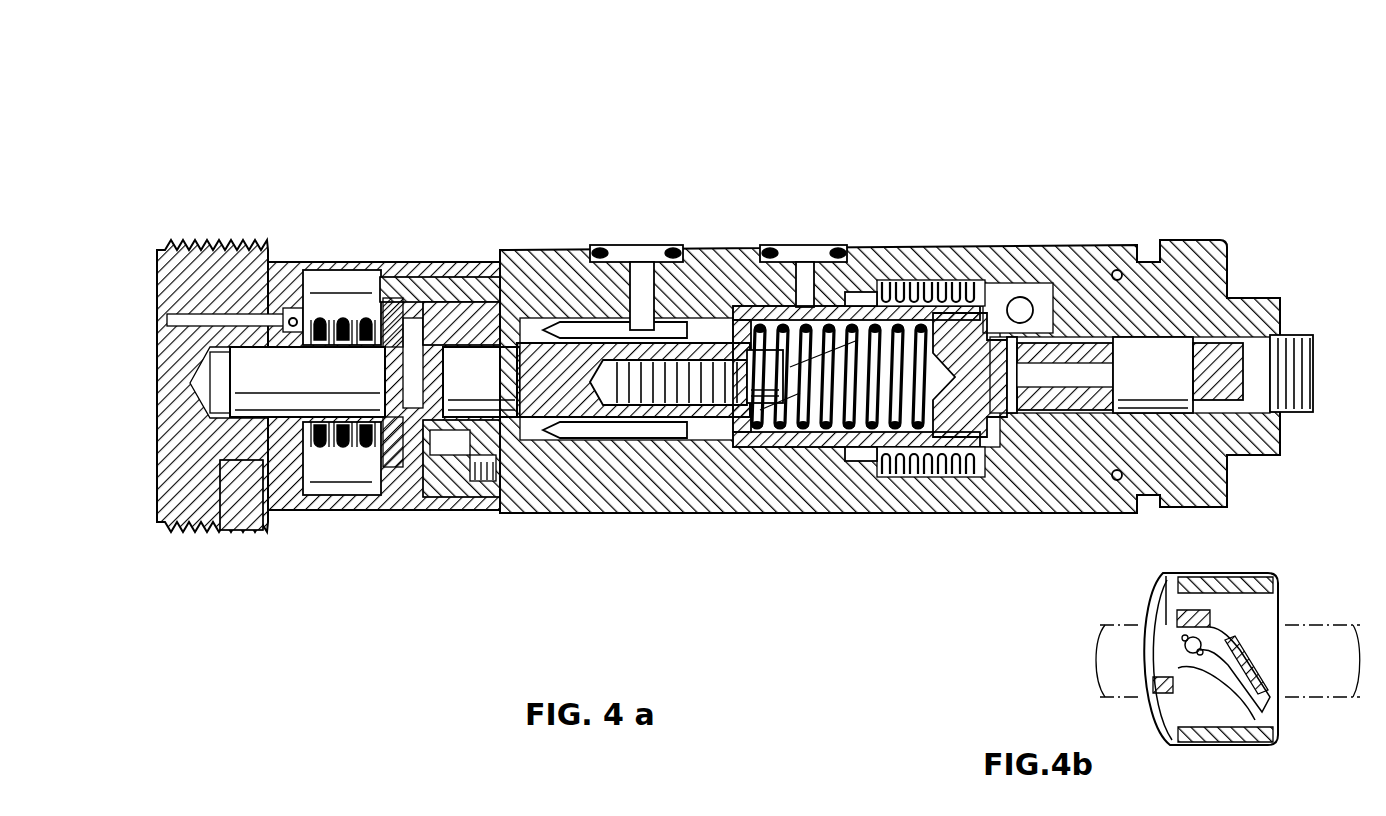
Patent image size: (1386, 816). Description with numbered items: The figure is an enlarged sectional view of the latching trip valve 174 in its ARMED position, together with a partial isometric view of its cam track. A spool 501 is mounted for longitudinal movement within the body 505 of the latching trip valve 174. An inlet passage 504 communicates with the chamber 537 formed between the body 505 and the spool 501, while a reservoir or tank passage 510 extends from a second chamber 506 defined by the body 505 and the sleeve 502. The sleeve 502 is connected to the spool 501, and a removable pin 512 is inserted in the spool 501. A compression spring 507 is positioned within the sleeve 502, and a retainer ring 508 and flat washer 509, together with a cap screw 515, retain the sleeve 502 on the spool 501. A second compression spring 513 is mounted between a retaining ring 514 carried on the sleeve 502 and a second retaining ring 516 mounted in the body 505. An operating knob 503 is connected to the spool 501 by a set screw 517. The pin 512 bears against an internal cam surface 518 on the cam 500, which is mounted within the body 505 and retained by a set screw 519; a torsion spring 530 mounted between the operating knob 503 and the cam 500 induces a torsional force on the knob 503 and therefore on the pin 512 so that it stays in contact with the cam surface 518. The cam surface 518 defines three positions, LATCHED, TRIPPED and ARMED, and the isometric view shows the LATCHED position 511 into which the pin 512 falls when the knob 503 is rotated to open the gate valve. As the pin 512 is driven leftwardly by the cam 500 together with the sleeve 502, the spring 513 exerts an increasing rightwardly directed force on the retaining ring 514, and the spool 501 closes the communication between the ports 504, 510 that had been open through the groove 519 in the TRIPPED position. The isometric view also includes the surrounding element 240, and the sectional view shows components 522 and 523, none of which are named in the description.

In FIG. 4A, the latching trip valve 174 is at (1172, 148).
In FIG. 4B, the roller 240 is at (1140, 600).
In FIG. 4A, the cam 500 is at (452, 305).
In FIG. 4A, the spool 501 is at (548, 300).
In FIG. 4A, the sleeve 502 is at (745, 515).
In FIG. 4A, the operating knob 503 is at (160, 262).
In FIG. 4A, the inlet passage 504 is at (645, 268).
In FIG. 4A, the body 505 is at (540, 515).
In FIG. 4A, the second chamber 506 is at (750, 330).
In FIG. 4A, the compression spring 507 is at (825, 515).
In FIG. 4A, the retainer ring 508 is at (700, 515).
In FIG. 4A, the flat washer 509 is at (790, 515).
In FIG. 4A, the tank passage 510 is at (815, 250).
In FIG. 4B, the LATCHED position 511 is at (1237, 603).
In FIG. 4A, the removable pin 512 is at (450, 300).
In FIG. 4A, the second compression spring 513 is at (935, 515).
In FIG. 4A, the retaining ring 514 is at (988, 515).
In FIG. 4A, the cap screw 515 is at (900, 300).
In FIG. 4A, the second retaining ring 516 is at (900, 515).
In FIG. 4A, the set screw 517 is at (248, 532).
In FIG. 4A, the internal cam surface 518 is at (482, 298).
In FIG. 4B, the internal cam surface 518 is at (1247, 660).
In FIG. 4A, the set screw 519 is at (458, 518).
In FIG. 4A, the nut 522 is at (1082, 262).
In FIG. 4A, the passage 523 is at (1018, 293).
In FIG. 4A, the torsion spring 530 is at (345, 300).
In FIG. 4A, the chamber 537 is at (580, 318).